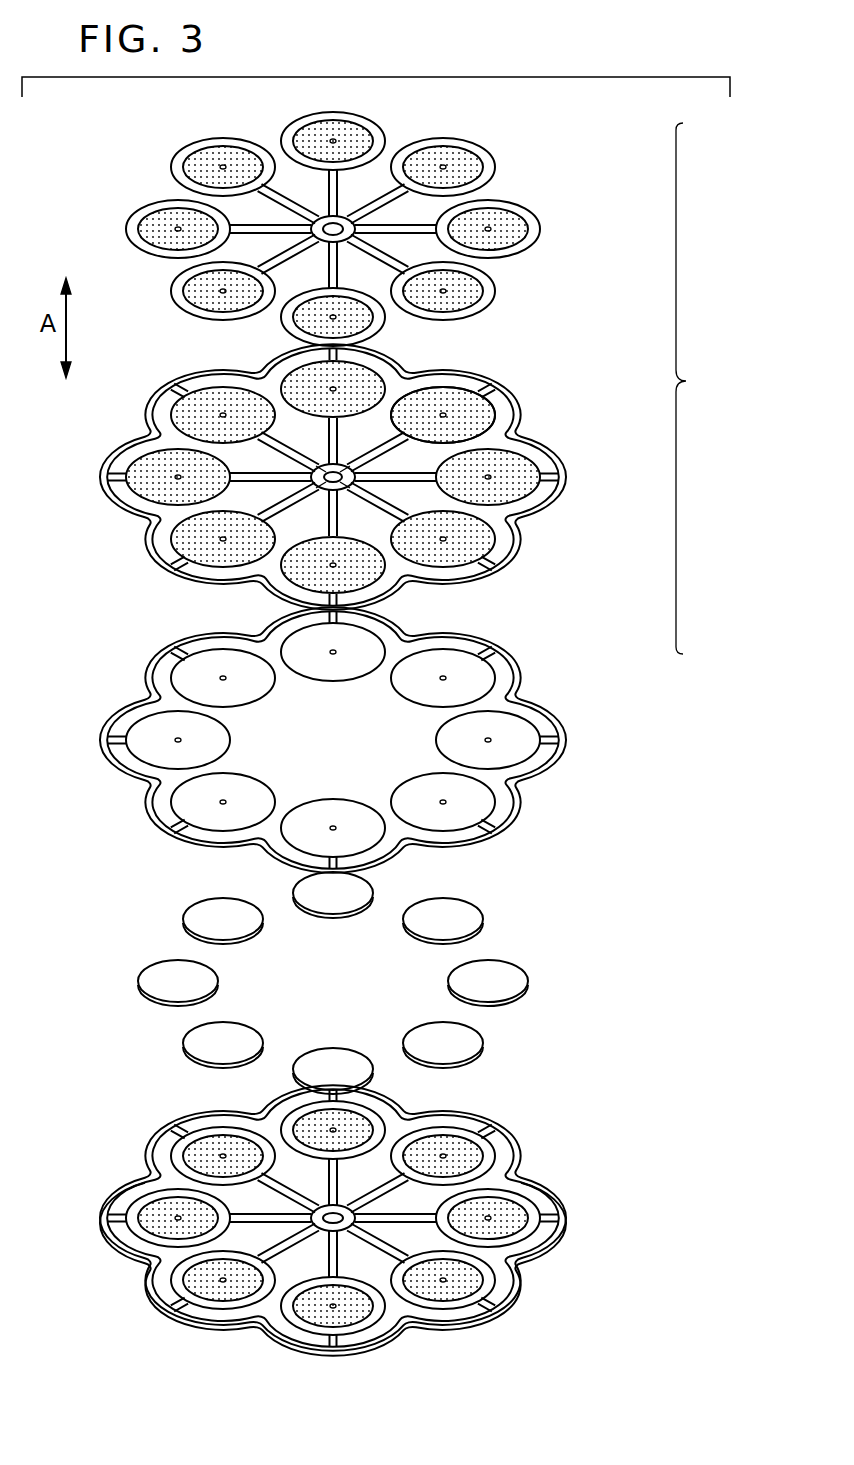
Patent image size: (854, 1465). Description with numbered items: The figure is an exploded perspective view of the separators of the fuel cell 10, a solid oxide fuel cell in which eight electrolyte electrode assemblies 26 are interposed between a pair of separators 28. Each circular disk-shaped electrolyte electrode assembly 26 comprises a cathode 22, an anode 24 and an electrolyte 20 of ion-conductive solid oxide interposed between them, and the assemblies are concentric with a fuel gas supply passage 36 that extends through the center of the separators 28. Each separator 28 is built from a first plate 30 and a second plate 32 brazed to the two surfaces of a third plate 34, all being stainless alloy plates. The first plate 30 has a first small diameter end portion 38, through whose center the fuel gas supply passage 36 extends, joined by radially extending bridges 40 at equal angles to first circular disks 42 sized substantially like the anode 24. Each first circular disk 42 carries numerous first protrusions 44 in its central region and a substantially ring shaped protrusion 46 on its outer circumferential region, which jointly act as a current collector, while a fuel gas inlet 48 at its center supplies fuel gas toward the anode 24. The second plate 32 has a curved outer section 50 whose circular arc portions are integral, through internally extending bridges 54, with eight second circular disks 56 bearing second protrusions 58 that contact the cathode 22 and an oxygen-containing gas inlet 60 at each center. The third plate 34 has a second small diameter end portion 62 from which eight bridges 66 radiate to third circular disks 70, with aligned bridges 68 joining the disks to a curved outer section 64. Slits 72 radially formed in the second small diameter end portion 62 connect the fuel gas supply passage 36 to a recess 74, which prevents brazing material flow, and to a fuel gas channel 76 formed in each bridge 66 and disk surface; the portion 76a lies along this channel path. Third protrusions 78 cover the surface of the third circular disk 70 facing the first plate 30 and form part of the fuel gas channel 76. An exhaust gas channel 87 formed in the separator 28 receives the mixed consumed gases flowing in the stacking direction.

The fuel cell 10 is at (58, 190).
The electrolyte 20 is at (144, 984).
The cathode 22 is at (170, 967).
The anode 24 is at (175, 993).
The electrolyte electrode assembly 26 is at (526, 958).
The separator 28 is at (553, 1186).
The first plate 30 is at (580, 166).
The second plate 32 is at (580, 652).
The third plate 34 is at (580, 407).
The fuel gas supply passage 36 is at (340, 236).
The first small diameter end portion 38 is at (343, 215).
The bridges 40 is at (284, 233).
The first circular disks 42 is at (474, 156).
The first protrusions 44 is at (522, 230).
The substantially ring shaped protrusion 46 is at (502, 252).
The fuel gas inlet 48 is at (487, 226).
The curved outer section 50 is at (462, 636).
The bridges 54 is at (494, 660).
The second circular disks 56 is at (522, 746).
The second protrusions 58 is at (418, 686).
The oxygen-containing gas inlet 60 is at (441, 676).
The second small diameter end portion 62 is at (344, 469).
The curved outer section 64 is at (464, 362).
The bridges 66 is at (287, 453).
The bridges 68 is at (182, 388).
The third circular disks 70 is at (478, 413).
The slits 72 is at (322, 468).
The recess 74 is at (322, 489).
The fuel gas channel 76 is at (458, 411).
The radial rib 76a is at (383, 454).
The third protrusions 78 is at (524, 484).
The exhaust gas channel 87 is at (405, 1232).